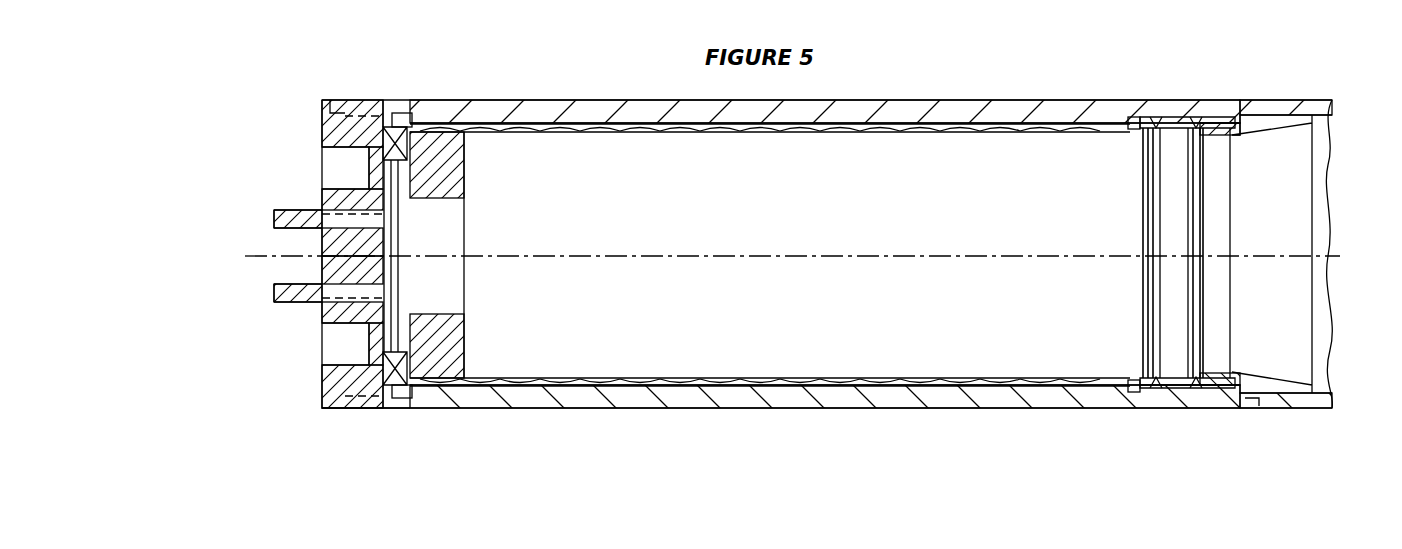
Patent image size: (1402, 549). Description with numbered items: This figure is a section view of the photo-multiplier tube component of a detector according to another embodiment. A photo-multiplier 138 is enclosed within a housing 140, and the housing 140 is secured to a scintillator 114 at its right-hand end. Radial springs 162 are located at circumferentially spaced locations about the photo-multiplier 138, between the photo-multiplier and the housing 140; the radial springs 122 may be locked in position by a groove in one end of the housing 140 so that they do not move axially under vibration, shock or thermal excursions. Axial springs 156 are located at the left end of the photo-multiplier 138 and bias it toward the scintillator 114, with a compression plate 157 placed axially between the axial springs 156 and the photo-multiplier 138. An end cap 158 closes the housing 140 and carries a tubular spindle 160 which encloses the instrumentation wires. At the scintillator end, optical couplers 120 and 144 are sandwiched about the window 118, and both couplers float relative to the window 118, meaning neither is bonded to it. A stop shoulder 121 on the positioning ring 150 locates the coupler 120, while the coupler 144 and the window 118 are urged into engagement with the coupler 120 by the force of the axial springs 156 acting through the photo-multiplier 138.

The scintillator 114 is at (1283, 198).
The window 118 is at (1175, 220).
The optical coupler 120 is at (1195, 287).
The stop shoulder 121 is at (1186, 387).
The radial springs 122 is at (590, 385).
The photo-multiplier 138 is at (830, 218).
The housing 140 is at (707, 408).
The optical coupler 144 is at (1157, 297).
The positioning ring 150 is at (1290, 377).
The axial springs 156 is at (397, 380).
The compression plate 157 is at (455, 357).
The end cap 158 is at (335, 132).
The tubular spindle 160 is at (287, 213).
The radial springs 162 is at (845, 130).